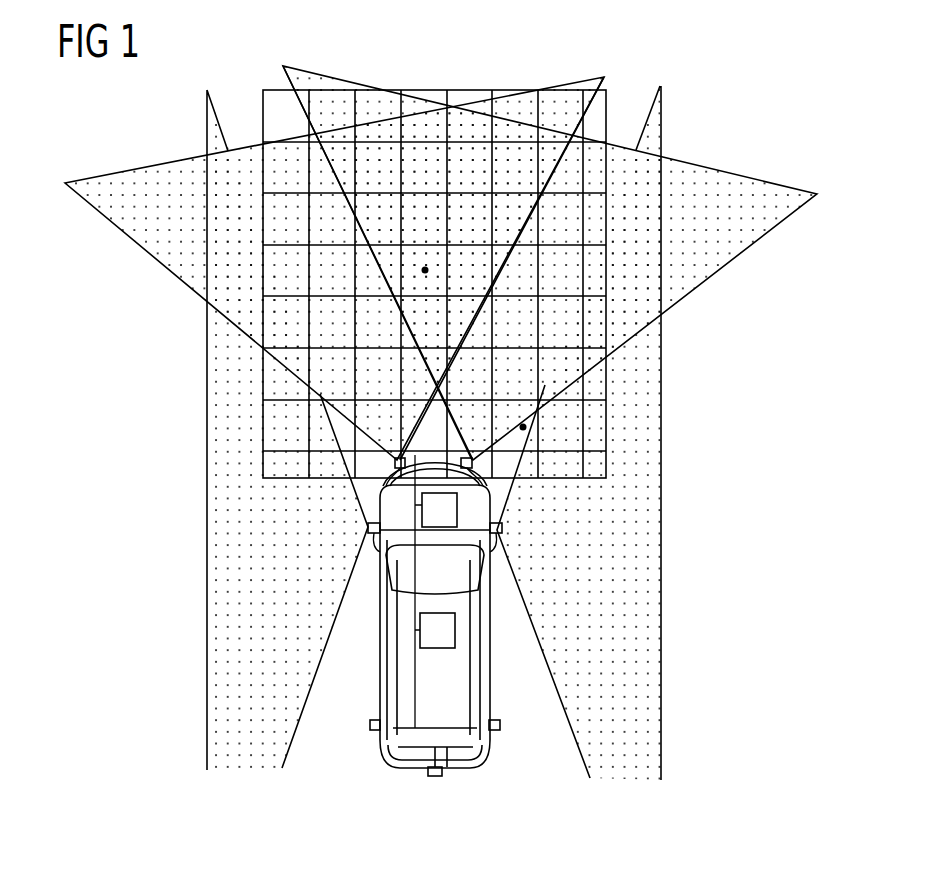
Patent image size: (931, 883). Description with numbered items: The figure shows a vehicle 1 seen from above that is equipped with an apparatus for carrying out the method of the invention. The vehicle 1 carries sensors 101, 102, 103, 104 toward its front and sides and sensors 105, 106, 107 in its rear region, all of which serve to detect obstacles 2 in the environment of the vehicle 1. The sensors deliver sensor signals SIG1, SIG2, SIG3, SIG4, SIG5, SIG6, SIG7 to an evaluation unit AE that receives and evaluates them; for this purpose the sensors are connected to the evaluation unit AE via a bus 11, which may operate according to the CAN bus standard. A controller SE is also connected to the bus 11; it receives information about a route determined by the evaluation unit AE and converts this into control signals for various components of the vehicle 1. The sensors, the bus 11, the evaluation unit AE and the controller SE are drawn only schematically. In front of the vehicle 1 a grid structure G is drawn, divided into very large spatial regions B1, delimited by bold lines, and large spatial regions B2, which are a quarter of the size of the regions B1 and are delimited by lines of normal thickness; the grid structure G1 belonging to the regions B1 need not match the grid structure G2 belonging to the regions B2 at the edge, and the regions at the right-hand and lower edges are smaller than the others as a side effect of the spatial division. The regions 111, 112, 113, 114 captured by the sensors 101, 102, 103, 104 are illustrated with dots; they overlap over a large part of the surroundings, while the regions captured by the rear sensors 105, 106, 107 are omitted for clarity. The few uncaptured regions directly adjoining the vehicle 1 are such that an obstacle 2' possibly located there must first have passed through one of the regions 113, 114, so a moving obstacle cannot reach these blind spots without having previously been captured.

The vehicle 1 is at (463, 767).
The bus 11 is at (447, 768).
The obstacle 2 is at (577, 307).
The obstacle 2' is at (615, 427).
The sensor 101 is at (368, 533).
The sensor 102 is at (393, 468).
The sensor 103 is at (478, 467).
The sensor 104 is at (502, 531).
The sensor 105 is at (500, 733).
The sensor 106 is at (434, 777).
The sensor 107 is at (372, 732).
The region captured by sensor 111 is at (232, 608).
The region captured by sensor 112 is at (132, 183).
The region captured by sensor 113 is at (735, 232).
The region captured by sensor 114 is at (635, 378).
The grid structure G is at (617, 104).
The grid structure G1 is at (287, 298).
The grid structure G2 is at (282, 245).
The very large spatial region B1 is at (272, 305).
The large spatial region B2 is at (283, 340).
The sensor signal SIG1 is at (382, 550).
The sensor signal SIG2 is at (385, 483).
The sensor signal SIG3 is at (498, 480).
The sensor signal SIG4 is at (492, 553).
The sensor signal SIG5 is at (497, 720).
The sensor signal SIG6 is at (423, 753).
The sensor signal SIG7 is at (378, 721).
The evaluation unit AE is at (439, 510).
The controller SE is at (437, 630).